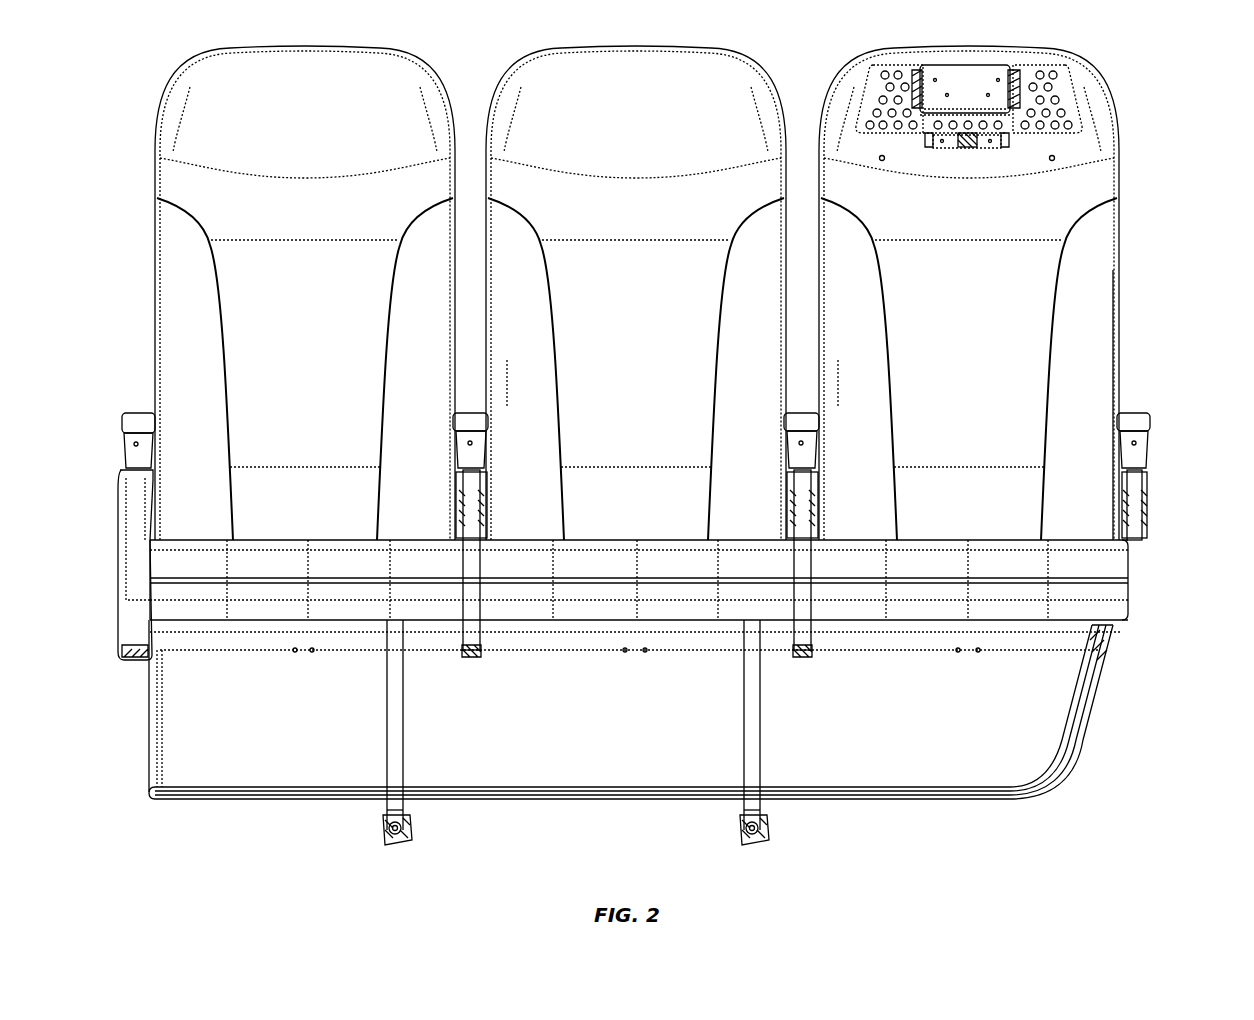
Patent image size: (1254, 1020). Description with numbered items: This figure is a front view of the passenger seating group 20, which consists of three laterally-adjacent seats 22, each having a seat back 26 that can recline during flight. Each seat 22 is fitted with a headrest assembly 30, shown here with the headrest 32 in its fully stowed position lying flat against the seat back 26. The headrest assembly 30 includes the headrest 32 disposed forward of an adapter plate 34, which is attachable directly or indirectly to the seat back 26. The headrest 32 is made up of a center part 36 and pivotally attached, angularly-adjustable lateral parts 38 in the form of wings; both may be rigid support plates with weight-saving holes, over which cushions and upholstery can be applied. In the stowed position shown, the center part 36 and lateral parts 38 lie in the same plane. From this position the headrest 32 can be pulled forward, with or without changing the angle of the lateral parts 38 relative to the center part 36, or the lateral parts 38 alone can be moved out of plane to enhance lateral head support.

The passenger seating group 20 is at (669, 423).
The seat 22 is at (845, 78).
The seat back 26 is at (1097, 252).
The headrest assembly 30 is at (974, 86).
The headrest 32 is at (977, 64).
The adapter plate 34 is at (993, 140).
The center part 36 is at (963, 82).
The lateral parts 38 is at (895, 93).